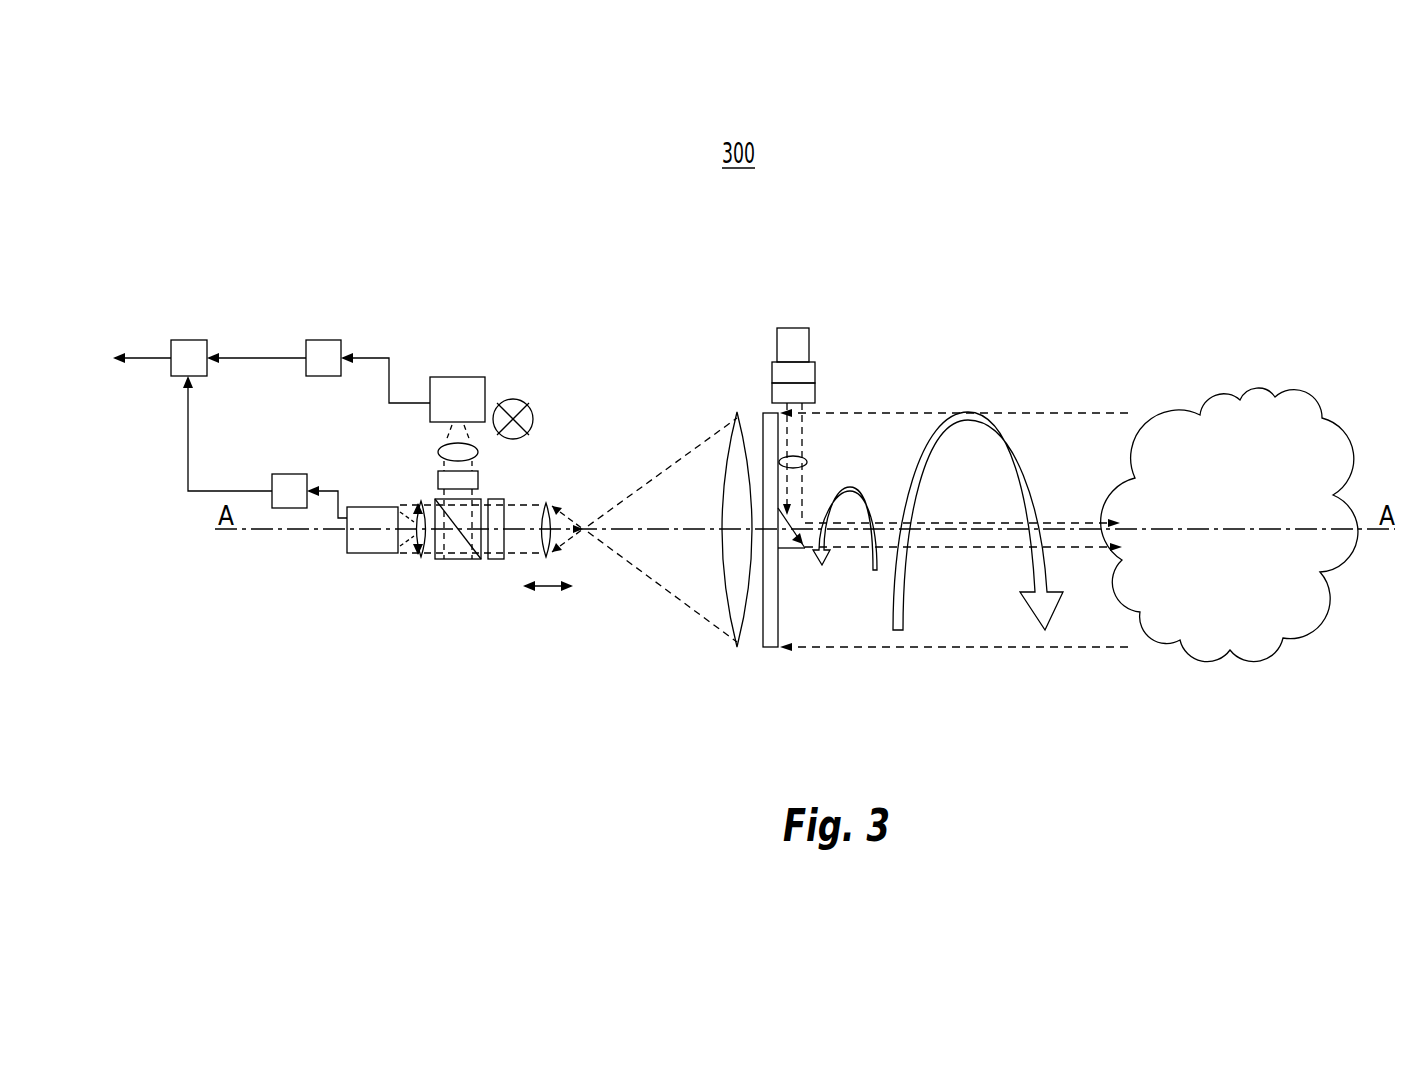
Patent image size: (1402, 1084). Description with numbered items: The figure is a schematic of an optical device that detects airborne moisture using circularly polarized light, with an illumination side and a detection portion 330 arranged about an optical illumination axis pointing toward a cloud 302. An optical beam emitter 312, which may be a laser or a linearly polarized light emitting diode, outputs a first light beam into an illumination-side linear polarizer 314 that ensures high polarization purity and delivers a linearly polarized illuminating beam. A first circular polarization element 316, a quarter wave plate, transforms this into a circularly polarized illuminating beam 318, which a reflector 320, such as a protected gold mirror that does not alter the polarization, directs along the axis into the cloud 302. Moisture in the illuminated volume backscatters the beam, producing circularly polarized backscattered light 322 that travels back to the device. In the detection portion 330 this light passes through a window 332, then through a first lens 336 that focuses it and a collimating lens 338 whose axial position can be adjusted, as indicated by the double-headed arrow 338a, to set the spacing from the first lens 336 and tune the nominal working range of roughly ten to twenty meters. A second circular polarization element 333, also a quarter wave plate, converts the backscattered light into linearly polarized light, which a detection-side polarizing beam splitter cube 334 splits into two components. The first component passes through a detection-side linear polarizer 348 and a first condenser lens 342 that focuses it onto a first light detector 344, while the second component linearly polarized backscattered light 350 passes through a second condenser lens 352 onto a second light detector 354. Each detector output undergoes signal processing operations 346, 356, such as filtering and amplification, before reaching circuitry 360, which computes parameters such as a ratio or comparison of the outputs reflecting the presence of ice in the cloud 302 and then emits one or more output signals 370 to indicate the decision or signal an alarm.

The cloud 302 is at (1228, 385).
The optical beam emitter 312 is at (788, 328).
The illumination-side linear polarizer 314 is at (815, 372).
The first circular polarization element 316 is at (815, 393).
The circularly polarized illuminating beam 318 is at (807, 463).
The reflector 320 is at (795, 553).
The circularly polarized backscattered light 322 is at (1032, 413).
The detection portion 330 is at (457, 740).
The window 332 is at (780, 648).
The second circular polarization element 333 is at (496, 561).
The detection-side polarizing beam splitter cube 334 is at (463, 561).
The first lens 336 is at (734, 625).
The collimating lens 338 is at (545, 560).
The double-headed arrow 338a is at (560, 592).
The first condenser lens 342 is at (439, 455).
The first light detector 344 is at (465, 377).
The signal processing operations 346 is at (332, 340).
The detection-side linear polarizer 348 is at (478, 482).
The second component linearly polarized backscattered light 350 is at (433, 561).
The second condenser lens 352 is at (416, 560).
The second light detector 354 is at (381, 553).
The signal processing operations 356 is at (290, 508).
The circuitry 360 is at (192, 340).
The output signals 370 is at (140, 357).